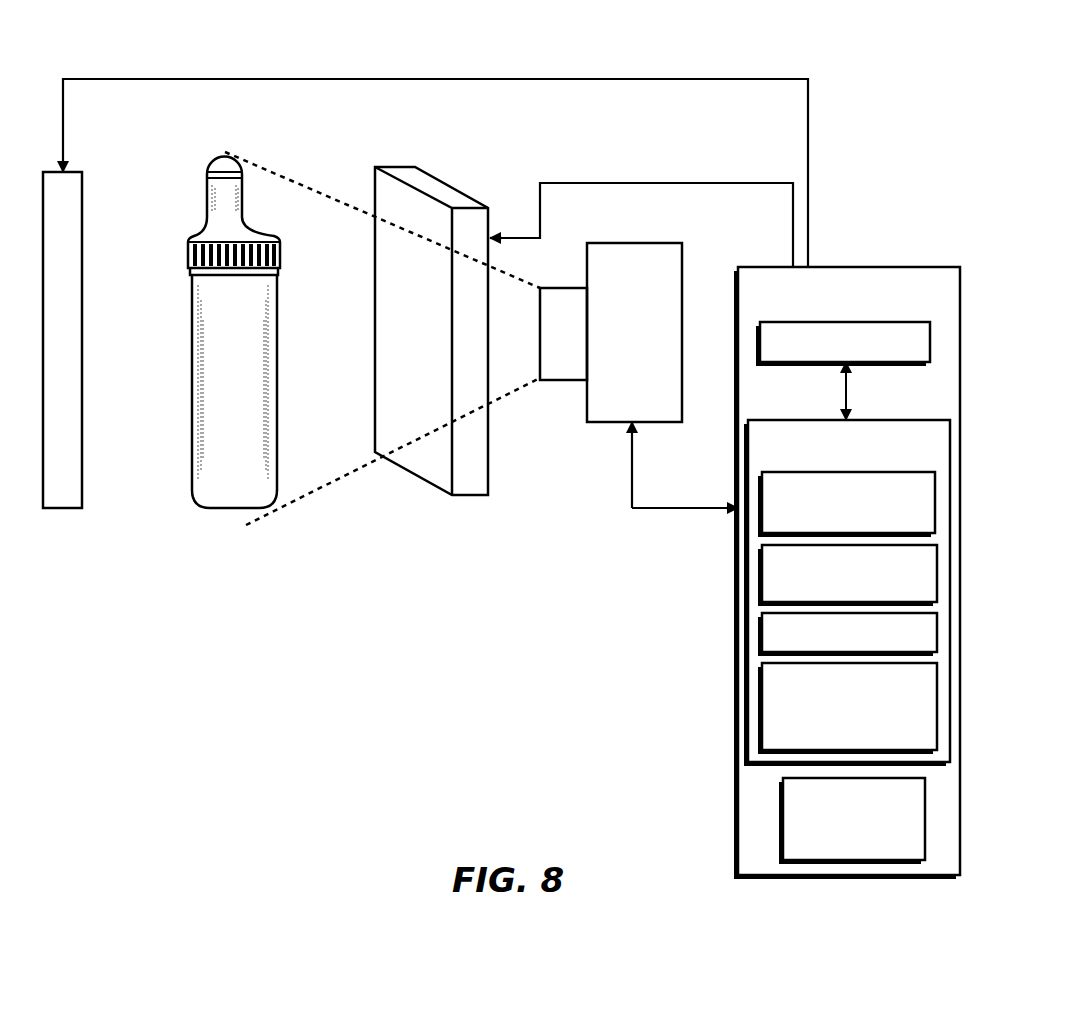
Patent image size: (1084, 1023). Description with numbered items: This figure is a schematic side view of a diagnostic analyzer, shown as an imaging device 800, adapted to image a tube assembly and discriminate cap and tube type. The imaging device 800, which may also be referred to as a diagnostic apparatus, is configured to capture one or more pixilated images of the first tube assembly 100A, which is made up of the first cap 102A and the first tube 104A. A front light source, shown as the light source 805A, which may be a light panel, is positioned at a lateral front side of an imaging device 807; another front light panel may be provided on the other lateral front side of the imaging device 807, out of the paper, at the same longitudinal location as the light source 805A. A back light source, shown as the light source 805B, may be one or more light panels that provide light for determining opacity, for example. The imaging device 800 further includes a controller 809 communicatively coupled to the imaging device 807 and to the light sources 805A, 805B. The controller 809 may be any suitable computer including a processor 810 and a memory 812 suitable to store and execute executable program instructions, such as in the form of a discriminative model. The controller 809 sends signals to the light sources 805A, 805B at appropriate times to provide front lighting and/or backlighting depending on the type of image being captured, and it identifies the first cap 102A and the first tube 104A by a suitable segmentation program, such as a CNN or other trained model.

The imaging device 800 is at (493, 50).
The light source 805B is at (82, 172).
The light source 805A is at (448, 183).
The first tube assembly 100A is at (258, 192).
The first cap 102A is at (207, 200).
The first tube 104A is at (192, 377).
The imaging device 807 is at (611, 332).
The controller 809 is at (856, 256).
The processor 810 is at (875, 363).
The memory 812 is at (818, 420).